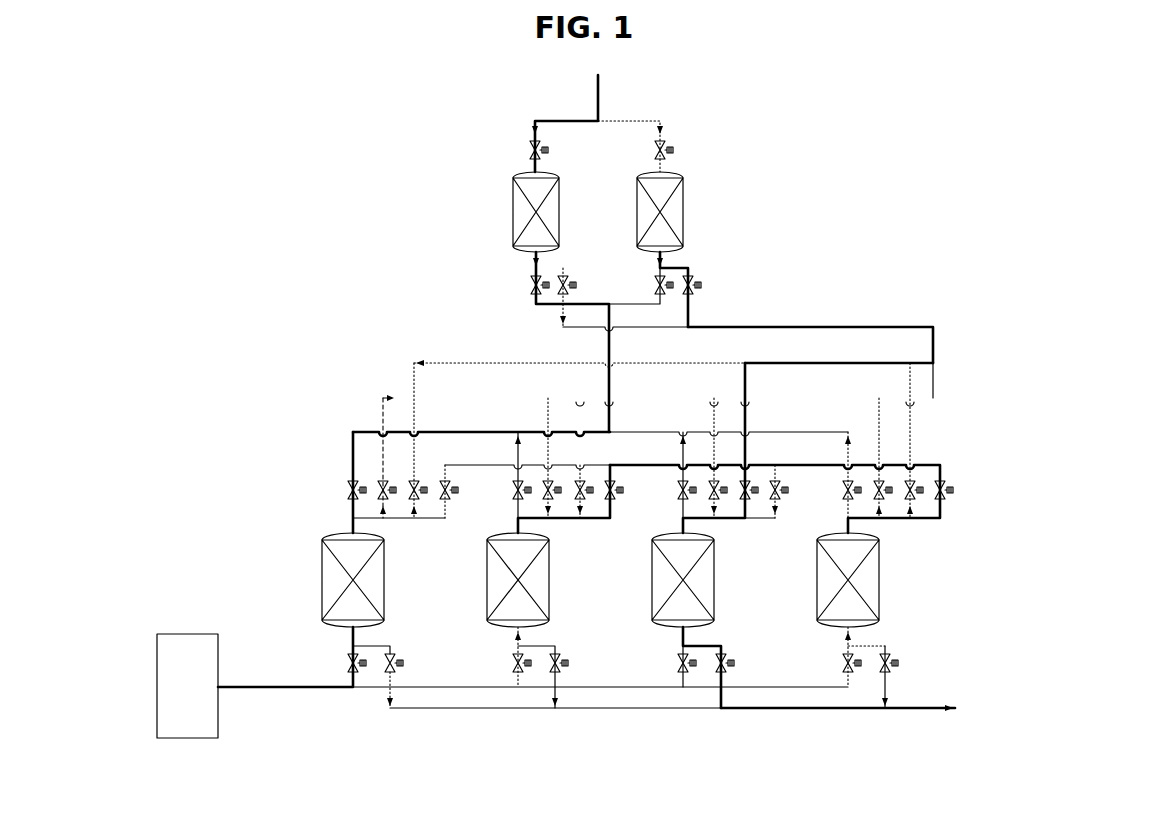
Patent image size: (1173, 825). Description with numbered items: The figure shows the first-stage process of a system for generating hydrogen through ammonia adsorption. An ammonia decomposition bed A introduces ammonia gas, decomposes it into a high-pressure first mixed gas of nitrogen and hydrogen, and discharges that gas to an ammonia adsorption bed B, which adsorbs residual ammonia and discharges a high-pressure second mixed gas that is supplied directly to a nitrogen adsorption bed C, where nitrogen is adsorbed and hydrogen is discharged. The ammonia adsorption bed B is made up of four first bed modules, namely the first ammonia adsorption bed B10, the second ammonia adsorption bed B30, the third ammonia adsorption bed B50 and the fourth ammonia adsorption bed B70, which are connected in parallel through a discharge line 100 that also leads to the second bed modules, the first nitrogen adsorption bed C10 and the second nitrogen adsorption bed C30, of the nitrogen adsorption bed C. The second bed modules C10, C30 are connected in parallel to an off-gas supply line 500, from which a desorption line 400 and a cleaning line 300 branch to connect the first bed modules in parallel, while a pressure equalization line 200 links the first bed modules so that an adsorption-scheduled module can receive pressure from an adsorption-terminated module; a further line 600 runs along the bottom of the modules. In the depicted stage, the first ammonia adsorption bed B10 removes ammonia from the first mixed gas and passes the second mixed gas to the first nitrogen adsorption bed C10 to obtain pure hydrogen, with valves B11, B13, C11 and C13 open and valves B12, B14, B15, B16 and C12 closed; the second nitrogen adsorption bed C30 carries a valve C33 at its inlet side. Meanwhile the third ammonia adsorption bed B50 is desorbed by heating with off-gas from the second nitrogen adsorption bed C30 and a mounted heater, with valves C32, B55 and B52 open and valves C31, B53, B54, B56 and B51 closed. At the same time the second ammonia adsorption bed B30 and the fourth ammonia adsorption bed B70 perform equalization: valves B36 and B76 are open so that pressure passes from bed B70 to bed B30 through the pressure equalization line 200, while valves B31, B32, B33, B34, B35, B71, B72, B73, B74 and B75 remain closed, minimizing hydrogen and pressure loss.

The ammonia decomposition bed A is at (185, 634).
The ammonia adsorption bed B is at (297, 540).
The nitrogen adsorption bed C is at (600, 253).
The discharge line 100 is at (270, 691).
The pressure equalization line 200 is at (945, 466).
The cleaning line 300 is at (930, 398).
The desorption line 400 is at (906, 362).
The off-gas supply line 500 is at (878, 326).
The exhaust line 600 is at (470, 711).
The ammonia adsorption bed 1 B10 is at (386, 595).
The valve B11 is at (345, 663).
The valve B12 is at (400, 655).
The valve B13 is at (345, 490).
The valve B14 is at (387, 499).
The valve B15 is at (420, 499).
The valve B16 is at (450, 499).
The ammonia adsorption bed 2 B30 is at (551, 595).
The valve B31 is at (510, 663).
The valve B32 is at (565, 655).
The valve B33 is at (511, 490).
The valve B34 is at (553, 499).
The valve B35 is at (585, 499).
The valve B36 is at (615, 499).
The ammonia adsorption bed 3 B50 is at (716, 595).
The valve B51 is at (675, 663).
The valve B52 is at (731, 655).
The valve B53 is at (676, 490).
The valve B54 is at (719, 499).
The valve B55 is at (750, 499).
The valve B56 is at (780, 499).
The ammonia adsorption bed 4 B70 is at (881, 595).
The valve B71 is at (840, 663).
The valve B72 is at (895, 655).
The valve B73 is at (841, 490).
The valve B74 is at (884, 499).
The valve B75 is at (915, 499).
The valve B76 is at (953, 490).
The nitrogen adsorption bed 1 C10 is at (560, 200).
The valve C11 is at (529, 286).
The valve C12 is at (570, 278).
The valve C13 is at (528, 151).
The nitrogen adsorption bed 2 C30 is at (684, 200).
The valve C31 is at (653, 285).
The valve C32 is at (701, 285).
The valve C33 is at (672, 150).